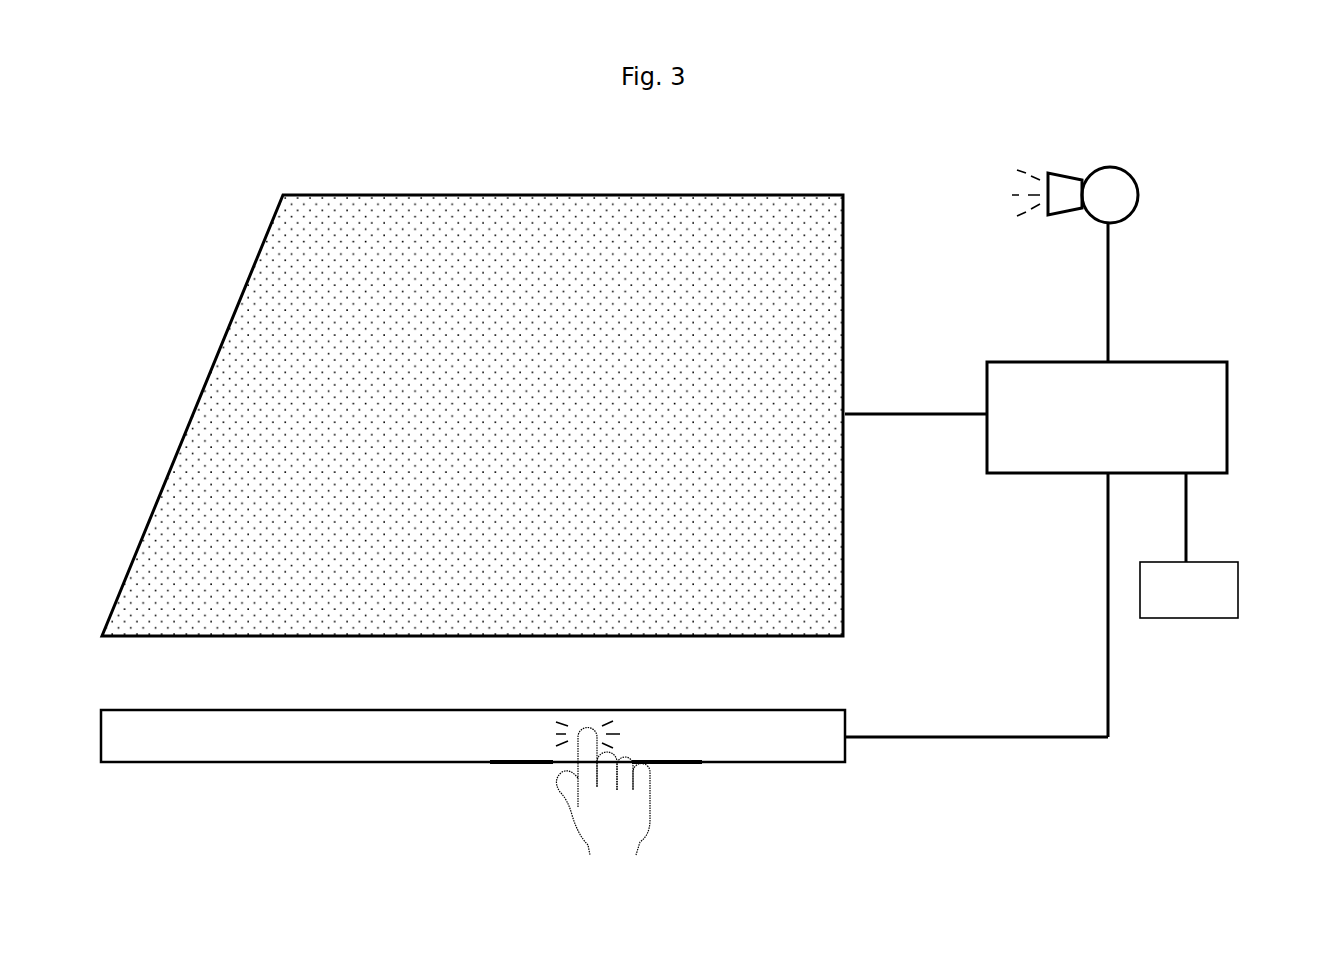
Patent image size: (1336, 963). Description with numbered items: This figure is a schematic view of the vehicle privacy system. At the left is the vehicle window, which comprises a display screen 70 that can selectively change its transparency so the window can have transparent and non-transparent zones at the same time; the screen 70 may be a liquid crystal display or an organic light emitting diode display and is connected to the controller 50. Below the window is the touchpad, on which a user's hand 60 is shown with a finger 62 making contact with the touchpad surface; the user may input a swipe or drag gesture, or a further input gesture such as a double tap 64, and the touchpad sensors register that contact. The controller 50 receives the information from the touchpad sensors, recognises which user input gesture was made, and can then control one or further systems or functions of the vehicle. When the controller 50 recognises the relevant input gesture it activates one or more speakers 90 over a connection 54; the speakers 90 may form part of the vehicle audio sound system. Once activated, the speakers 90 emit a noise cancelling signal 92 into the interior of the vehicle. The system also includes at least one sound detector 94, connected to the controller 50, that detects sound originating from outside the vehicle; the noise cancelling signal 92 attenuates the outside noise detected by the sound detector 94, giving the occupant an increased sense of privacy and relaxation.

The display screen 70 is at (651, 232).
The controller 50 is at (1215, 425).
The signal line 54 is at (1108, 302).
The speaker 90 is at (1113, 195).
The noise cancelling signal 92 is at (1022, 168).
The sound detector 94 is at (1223, 608).
The hand of user 60 is at (628, 815).
The finger 62 is at (588, 735).
The double tap 64 is at (612, 712).